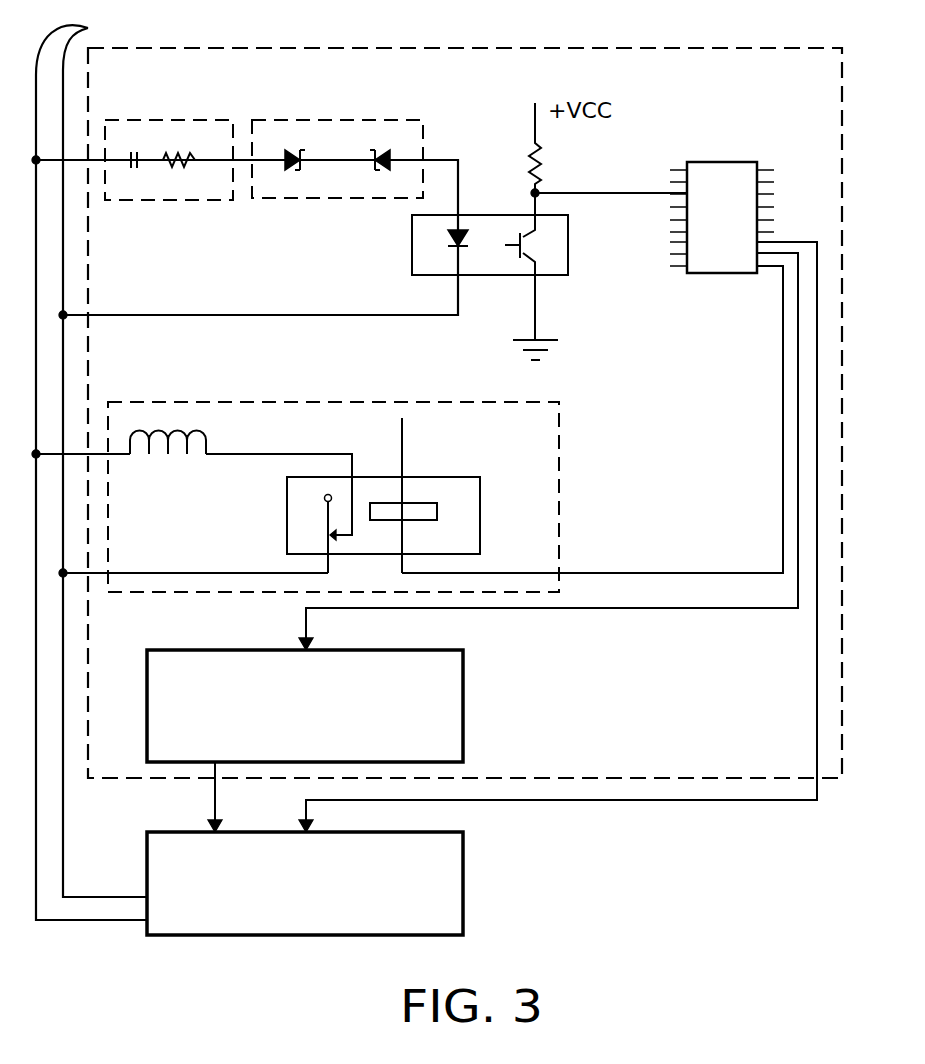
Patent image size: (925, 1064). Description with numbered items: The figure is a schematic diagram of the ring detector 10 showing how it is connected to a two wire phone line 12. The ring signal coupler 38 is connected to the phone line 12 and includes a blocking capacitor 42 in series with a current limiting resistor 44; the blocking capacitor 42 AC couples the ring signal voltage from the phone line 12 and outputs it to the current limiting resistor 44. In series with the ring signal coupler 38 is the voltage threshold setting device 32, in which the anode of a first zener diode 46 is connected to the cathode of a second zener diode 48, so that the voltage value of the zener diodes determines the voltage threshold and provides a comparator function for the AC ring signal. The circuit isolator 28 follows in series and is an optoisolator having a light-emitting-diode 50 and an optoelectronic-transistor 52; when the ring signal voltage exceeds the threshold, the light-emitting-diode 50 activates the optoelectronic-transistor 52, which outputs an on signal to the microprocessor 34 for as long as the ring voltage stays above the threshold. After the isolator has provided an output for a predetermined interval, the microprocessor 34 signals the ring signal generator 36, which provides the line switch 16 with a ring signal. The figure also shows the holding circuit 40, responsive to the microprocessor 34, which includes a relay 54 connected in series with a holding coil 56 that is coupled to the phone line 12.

The ring detector 10 is at (535, 48).
The phone line 12 is at (91, 466).
The line switch 16 is at (463, 875).
The circuit isolator 28 is at (412, 255).
The voltage threshold setting device 32 is at (307, 120).
The microprocessor 34 is at (738, 162).
The ring signal generator 36 is at (463, 690).
The ring signal coupler 38 is at (175, 120).
The holding circuit 40 is at (559, 498).
The blocking capacitor 42 is at (133, 167).
The current limiting resistor 44 is at (160, 150).
The first zener diode 46 is at (288, 148).
The second zener diode 48 is at (383, 171).
The light-emitting-diode 50 is at (468, 237).
The optoelectronic-transistor 52 is at (528, 245).
The relay 54 is at (437, 477).
The holding coil 56 is at (205, 438).